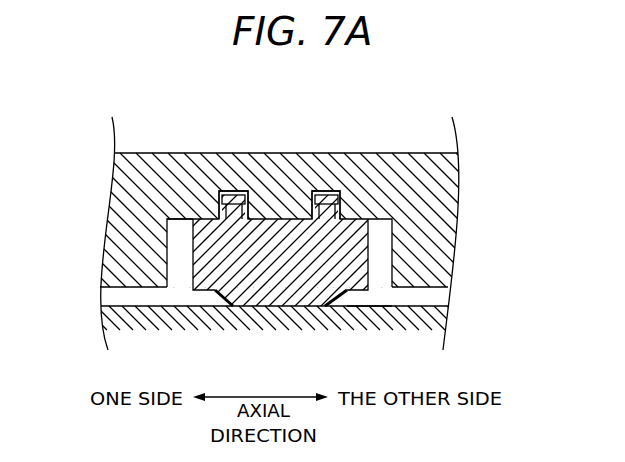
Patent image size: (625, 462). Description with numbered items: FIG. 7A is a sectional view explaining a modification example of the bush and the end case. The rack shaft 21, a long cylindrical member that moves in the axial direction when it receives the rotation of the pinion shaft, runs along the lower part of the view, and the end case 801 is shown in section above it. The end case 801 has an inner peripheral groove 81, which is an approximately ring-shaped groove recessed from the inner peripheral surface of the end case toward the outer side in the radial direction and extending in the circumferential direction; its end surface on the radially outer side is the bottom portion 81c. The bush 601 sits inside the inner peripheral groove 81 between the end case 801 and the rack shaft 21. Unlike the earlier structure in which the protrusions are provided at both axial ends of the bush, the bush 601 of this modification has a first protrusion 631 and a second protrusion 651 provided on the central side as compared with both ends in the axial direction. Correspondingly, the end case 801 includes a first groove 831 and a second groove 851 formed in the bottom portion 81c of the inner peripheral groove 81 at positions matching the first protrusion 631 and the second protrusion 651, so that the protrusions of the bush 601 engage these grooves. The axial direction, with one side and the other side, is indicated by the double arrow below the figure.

The end case 801 is at (474, 210).
The rack shaft 21 is at (123, 307).
The inner peripheral groove 81 is at (171, 299).
The bottom portion 81c is at (180, 221).
The first protrusion 631 is at (230, 207).
The second protrusion 651 is at (320, 207).
The first groove 831 is at (239, 197).
The second groove 851 is at (333, 197).
The bush 601 is at (358, 311).